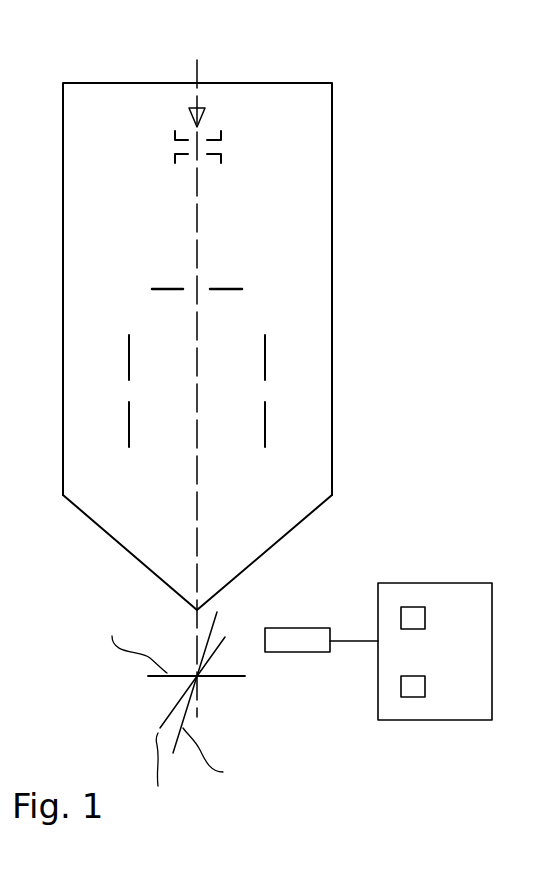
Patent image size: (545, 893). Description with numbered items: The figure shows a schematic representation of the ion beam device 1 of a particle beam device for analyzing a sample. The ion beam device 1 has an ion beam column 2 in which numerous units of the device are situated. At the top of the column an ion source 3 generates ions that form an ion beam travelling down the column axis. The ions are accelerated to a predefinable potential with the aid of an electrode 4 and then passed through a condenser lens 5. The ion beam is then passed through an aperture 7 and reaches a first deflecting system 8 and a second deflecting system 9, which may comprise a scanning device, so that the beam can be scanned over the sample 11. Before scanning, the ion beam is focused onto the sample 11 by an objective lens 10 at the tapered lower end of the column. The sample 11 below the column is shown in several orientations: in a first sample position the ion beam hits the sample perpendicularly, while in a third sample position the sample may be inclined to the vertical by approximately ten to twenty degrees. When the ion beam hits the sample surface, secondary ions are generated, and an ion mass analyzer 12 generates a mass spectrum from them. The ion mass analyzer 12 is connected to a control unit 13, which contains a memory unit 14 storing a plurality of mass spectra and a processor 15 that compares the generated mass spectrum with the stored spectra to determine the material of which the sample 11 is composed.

The ion beam device 1 is at (438, 92).
The ion beam column 2 is at (332, 118).
The ion source 3 is at (196, 108).
The electrode 4 is at (221, 137).
The condenser lens 5 is at (221, 157).
The aperture 7 is at (227, 288).
The first deflecting system 8 is at (266, 357).
The second deflecting system 9 is at (266, 428).
The objective lens 10 is at (264, 547).
The sample 11 is at (225, 640).
The ion mass analyzer 12 is at (295, 653).
The control unit 13 is at (467, 713).
The memory unit 14 is at (412, 607).
The processor 15 is at (412, 697).